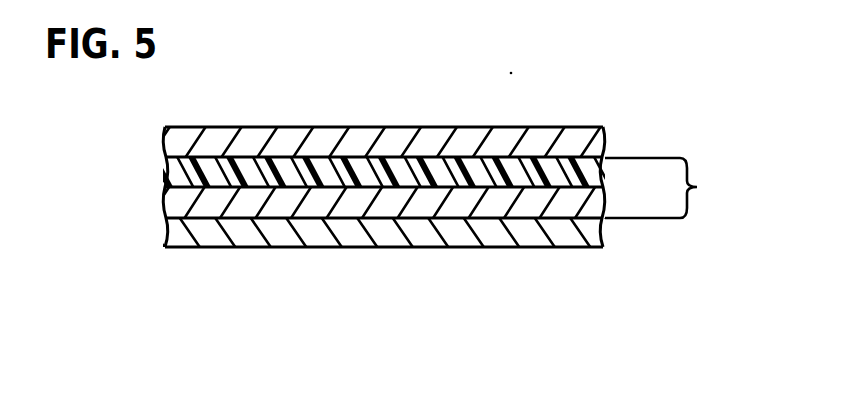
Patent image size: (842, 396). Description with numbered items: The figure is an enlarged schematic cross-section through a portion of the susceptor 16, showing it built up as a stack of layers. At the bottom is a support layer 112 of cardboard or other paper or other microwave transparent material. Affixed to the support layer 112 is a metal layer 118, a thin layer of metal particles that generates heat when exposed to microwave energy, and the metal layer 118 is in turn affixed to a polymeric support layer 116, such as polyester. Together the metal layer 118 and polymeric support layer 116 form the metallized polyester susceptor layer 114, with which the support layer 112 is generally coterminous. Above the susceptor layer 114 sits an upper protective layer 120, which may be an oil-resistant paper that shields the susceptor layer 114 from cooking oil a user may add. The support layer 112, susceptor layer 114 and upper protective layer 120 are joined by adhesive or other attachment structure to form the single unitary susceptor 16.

The susceptor 16 is at (601, 108).
The upper protective layer 120 is at (170, 144).
The polymeric support layer 116 is at (168, 171).
The metal layer 118 is at (165, 203).
The support layer 112 is at (170, 235).
The susceptor layer 114 is at (673, 188).